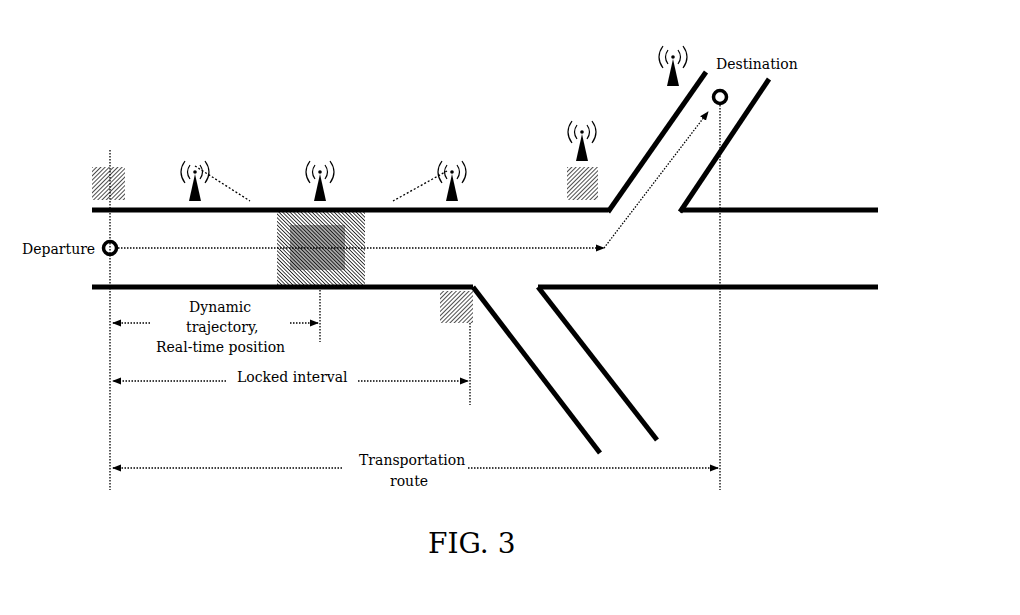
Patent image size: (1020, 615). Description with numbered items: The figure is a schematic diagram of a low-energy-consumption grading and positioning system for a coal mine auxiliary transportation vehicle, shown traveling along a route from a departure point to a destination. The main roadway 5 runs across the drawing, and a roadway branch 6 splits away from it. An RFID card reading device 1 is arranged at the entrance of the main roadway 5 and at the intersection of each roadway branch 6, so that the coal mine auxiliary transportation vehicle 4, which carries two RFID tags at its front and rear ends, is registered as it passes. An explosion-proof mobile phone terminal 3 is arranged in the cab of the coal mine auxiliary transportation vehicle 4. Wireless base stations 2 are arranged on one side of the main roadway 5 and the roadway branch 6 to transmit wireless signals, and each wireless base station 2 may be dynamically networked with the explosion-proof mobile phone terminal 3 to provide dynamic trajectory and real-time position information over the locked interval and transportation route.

The RFID card reading device 1 is at (79, 114).
The wireless base station 2 is at (188, 117).
The explosion-proof mobile phone terminal 3 is at (281, 119).
The coal mine auxiliary transportation vehicle 4 is at (369, 152).
The main roadway 5 is at (496, 225).
The roadway branch 6 is at (642, 371).